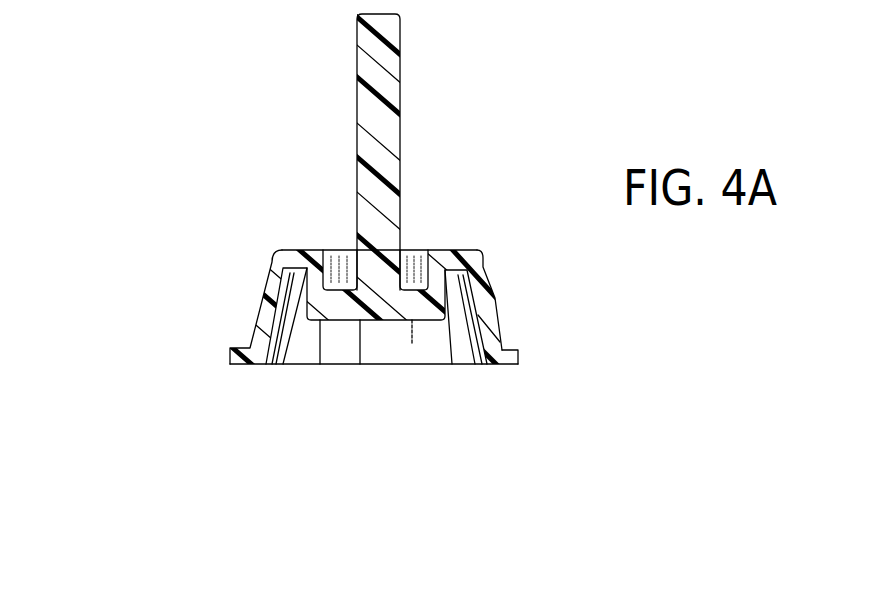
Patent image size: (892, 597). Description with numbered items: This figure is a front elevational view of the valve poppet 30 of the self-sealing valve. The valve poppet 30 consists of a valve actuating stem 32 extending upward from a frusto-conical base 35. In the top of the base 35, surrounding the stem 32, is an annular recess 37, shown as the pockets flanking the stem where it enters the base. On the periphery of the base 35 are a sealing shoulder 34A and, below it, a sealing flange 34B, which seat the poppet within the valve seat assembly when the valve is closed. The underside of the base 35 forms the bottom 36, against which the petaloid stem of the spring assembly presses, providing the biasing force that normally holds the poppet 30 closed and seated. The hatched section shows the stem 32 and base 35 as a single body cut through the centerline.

The mounting assembly 30 is at (205, 117).
The stem 32 is at (392, 95).
The upper flange wall 34A is at (497, 298).
The lower flange foot 34B is at (510, 352).
The skirt wall 35 is at (258, 290).
The base 36 is at (373, 322).
The recess 37 is at (410, 262).